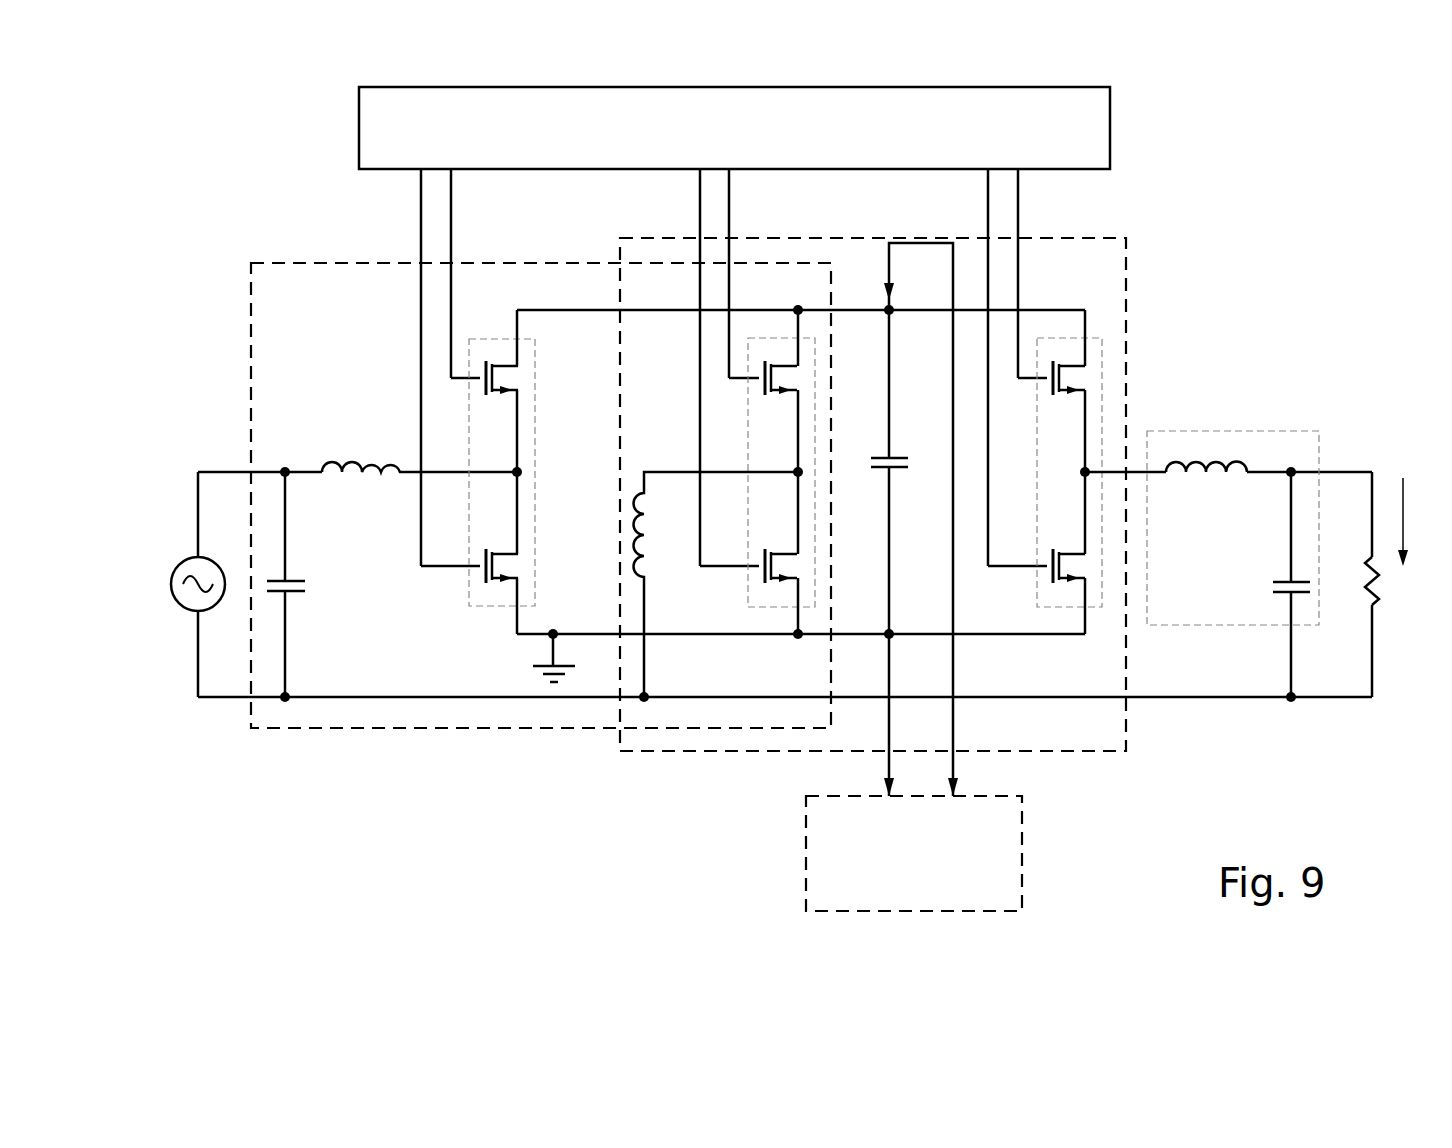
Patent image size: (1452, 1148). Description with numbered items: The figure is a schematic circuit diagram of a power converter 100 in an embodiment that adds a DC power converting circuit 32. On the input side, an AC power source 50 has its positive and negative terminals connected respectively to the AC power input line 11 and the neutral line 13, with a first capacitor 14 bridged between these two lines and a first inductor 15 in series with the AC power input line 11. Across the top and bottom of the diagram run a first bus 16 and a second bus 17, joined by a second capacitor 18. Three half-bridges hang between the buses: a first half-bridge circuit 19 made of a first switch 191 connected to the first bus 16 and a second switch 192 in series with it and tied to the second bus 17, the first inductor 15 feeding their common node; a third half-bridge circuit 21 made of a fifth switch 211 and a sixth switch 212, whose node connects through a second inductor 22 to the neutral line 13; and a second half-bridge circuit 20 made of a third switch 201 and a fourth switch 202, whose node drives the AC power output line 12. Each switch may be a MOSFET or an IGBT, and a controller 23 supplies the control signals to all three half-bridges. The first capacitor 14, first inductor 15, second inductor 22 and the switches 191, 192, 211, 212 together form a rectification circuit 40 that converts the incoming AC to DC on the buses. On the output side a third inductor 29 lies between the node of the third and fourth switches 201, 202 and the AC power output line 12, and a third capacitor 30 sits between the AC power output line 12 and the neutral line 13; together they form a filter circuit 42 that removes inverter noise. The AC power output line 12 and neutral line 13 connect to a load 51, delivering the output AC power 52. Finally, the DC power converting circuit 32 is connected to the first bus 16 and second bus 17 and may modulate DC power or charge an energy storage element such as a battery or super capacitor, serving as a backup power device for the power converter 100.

The power converter 100 is at (1355, 110).
The controller 23 is at (1110, 135).
The rectification circuit 40 is at (288, 263).
The first bus 16 is at (578, 310).
The AC power input line 11 is at (218, 472).
The AC power output line 12 is at (1340, 472).
The neutral line 13 is at (352, 700).
The first capacitor 14 is at (300, 576).
The first inductor 15 is at (361, 462).
The second bus 17 is at (697, 636).
The second capacitor 18 is at (896, 474).
The first half-bridge circuit 19 is at (469, 497).
The first switch 191 is at (490, 360).
The second switch 192 is at (482, 586).
The second half-bridge circuit 20 is at (1103, 402).
The third switch 201 is at (1058, 340).
The fourth switch 202 is at (1065, 600).
The third half-bridge circuit 21 is at (748, 395).
The fifth switch 211 is at (770, 340).
The sixth switch 212 is at (787, 540).
The second inductor 22 is at (634, 540).
The third inductor 29 is at (1200, 476).
The third capacitor 30 is at (1278, 594).
The DC power converting circuit 32 is at (1024, 852).
The filter circuit 42 is at (1272, 431).
The AC power source 50 is at (183, 560).
The load 51 is at (1380, 590).
The output AC power 52 is at (1410, 480).